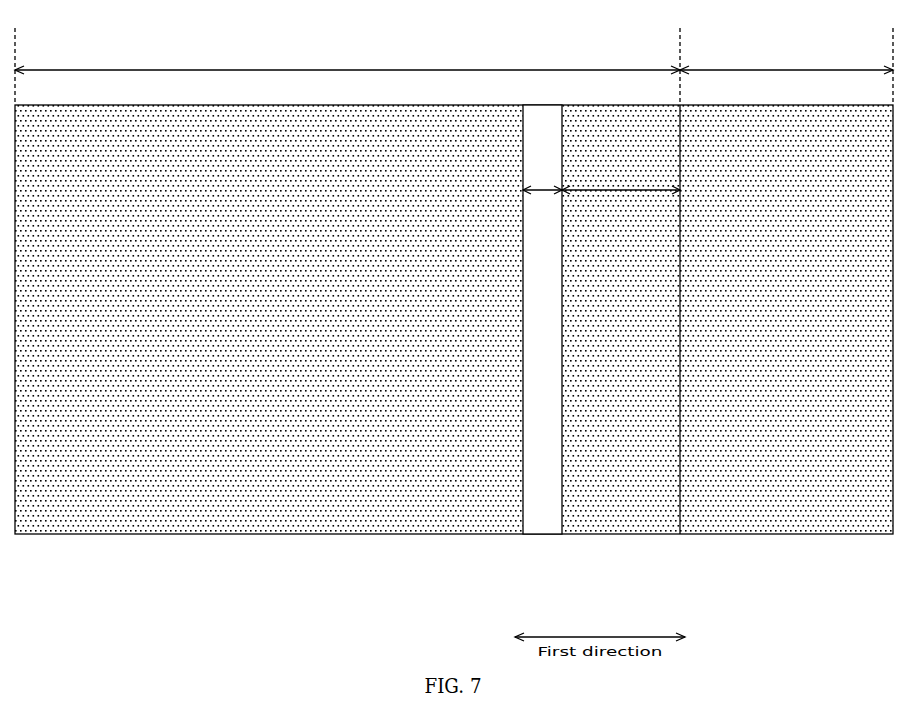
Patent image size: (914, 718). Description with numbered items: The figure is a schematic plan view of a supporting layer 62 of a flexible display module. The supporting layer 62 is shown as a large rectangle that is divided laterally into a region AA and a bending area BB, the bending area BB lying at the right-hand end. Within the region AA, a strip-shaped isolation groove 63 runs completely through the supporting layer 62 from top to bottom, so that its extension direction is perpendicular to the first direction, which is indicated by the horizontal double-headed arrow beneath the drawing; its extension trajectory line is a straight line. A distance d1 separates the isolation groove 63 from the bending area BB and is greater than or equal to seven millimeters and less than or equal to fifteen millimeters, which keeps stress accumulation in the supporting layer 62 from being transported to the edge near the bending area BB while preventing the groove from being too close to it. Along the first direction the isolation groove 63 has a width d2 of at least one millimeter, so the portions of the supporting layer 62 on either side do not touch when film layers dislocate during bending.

The supporting layer 62 is at (275, 462).
The isolation groove 63 is at (544, 464).
The region AA is at (347, 66).
The bending area BB is at (786, 66).
The distance between the isolation groove and the bending area d1 is at (621, 201).
The width of the isolation groove d2 is at (542, 201).